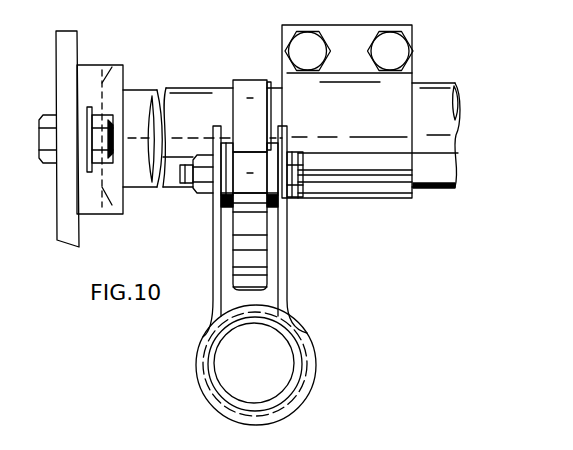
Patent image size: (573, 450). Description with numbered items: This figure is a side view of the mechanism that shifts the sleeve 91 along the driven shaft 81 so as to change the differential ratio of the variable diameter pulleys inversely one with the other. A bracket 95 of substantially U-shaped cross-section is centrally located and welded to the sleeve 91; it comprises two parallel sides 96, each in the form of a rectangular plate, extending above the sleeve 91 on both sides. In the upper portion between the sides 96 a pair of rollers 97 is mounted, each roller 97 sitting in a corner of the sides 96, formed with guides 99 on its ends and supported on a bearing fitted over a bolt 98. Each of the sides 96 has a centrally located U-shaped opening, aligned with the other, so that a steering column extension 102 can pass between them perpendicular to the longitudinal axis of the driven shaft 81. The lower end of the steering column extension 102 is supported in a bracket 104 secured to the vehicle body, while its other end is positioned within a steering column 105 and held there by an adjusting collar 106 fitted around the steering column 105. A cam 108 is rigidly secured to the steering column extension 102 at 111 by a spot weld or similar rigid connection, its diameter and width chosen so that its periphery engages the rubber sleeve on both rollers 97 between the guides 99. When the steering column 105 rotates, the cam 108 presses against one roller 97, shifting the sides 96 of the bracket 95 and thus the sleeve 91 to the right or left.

The driven shaft 81 is at (229, 375).
The sleeve 91 is at (203, 362).
The bracket 95 is at (313, 334).
The parallel sides 96 is at (283, 243).
The rollers 97 is at (242, 190).
The bolt 98 is at (291, 190).
The guides 99 is at (273, 207).
The steering column extension 102 is at (196, 99).
The bracket 104 is at (97, 68).
The steering column 105 is at (437, 90).
The adjusting collar 106 is at (363, 183).
The cam 108 is at (241, 82).
The spot weld connection 111 is at (270, 80).